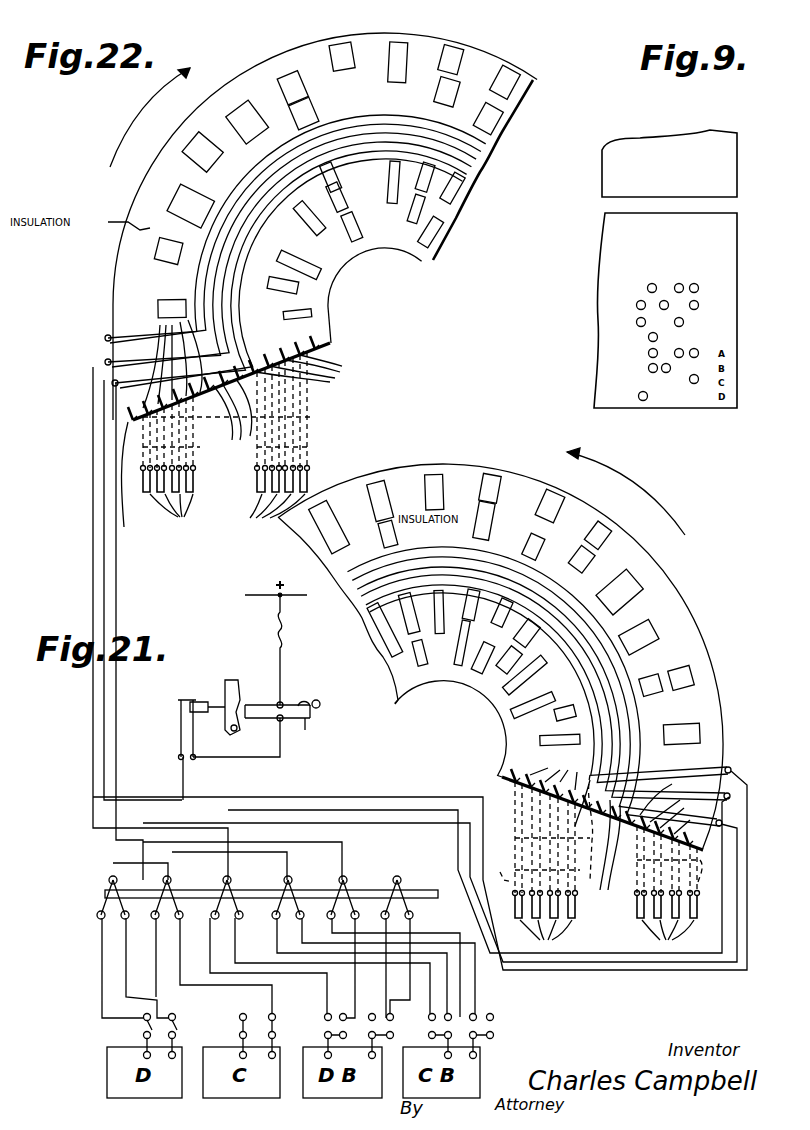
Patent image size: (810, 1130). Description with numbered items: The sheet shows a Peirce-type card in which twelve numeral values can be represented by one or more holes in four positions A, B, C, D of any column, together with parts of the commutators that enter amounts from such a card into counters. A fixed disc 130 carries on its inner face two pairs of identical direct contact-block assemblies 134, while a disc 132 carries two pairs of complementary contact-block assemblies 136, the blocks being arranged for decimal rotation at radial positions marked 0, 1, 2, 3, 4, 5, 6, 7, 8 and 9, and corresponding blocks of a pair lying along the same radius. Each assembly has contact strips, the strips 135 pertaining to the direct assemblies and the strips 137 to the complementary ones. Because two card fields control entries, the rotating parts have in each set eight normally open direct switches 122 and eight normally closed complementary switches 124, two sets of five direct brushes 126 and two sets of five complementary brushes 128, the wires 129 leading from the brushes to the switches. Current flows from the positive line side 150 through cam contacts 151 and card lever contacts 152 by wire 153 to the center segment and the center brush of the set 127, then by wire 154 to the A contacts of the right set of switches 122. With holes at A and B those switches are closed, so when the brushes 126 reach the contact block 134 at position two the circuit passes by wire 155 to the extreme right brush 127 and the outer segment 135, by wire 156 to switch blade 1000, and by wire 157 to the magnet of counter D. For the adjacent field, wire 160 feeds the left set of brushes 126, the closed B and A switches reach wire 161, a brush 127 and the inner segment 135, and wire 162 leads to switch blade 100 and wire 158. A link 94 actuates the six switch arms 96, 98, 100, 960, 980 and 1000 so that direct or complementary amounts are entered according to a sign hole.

In FIG. 22, the radial position marked zero 0 is at (506, 60).
In FIG. 21, the radial position marked zero 0 is at (305, 504).
In FIG. 22, the radial position marked one 1 is at (458, 40).
In FIG. 21, the radial position marked one 1 is at (362, 476).
In FIG. 22, the radial position marked two 2 is at (388, 34).
In FIG. 21, the radial position marked two 2 is at (422, 464).
In FIG. 22, the radial position marked three 3 is at (330, 38).
In FIG. 21, the radial position marked three 3 is at (488, 470).
In FIG. 22, the radial position marked four 4 is at (268, 62).
In FIG. 21, the radial position marked four 4 is at (548, 482).
In FIG. 22, the radial position marked five 5 is at (216, 96).
In FIG. 21, the radial position marked five 5 is at (600, 510).
In FIG. 22, the radial position marked six 6 is at (166, 140).
In FIG. 21, the radial position marked six 6 is at (646, 552).
In FIG. 22, the radial position marked seven 7 is at (135, 192).
In FIG. 21, the radial position marked seven 7 is at (686, 598).
In FIG. 22, the radial position marked eight 8 is at (112, 250).
In FIG. 21, the radial position marked eight 8 is at (712, 660).
In FIG. 22, the radial position marked nine 9 is at (112, 318).
In FIG. 21, the radial position marked nine 9 is at (724, 721).
In FIG. 21, the link 94 is at (420, 890).
In FIG. 21, the switch-arm 96 is at (388, 882).
In FIG. 21, the switch-arm 98 is at (280, 882).
In FIG. 21, the switch blade 100 is at (128, 890).
In FIG. 21, the direct switch 122 is at (607, 871).
In FIG. 22, the complementary switch 124 is at (226, 445).
In FIG. 21, the direct brush 126 is at (602, 797).
In FIG. 21, the brush of the set 127 is at (621, 860).
In FIG. 22, the complementary brush 128 is at (133, 518).
In FIG. 22, the wires 129 is at (232, 417).
In FIG. 21, the fixed disc 130 is at (430, 688).
In FIG. 22, the disc 132 is at (336, 296).
In FIG. 21, the direct contact-block assembly 134 is at (527, 478).
In FIG. 21, the contact strip 135 is at (525, 590).
In FIG. 22, the complementary contact-block assembly 136 is at (330, 70).
In FIG. 22, the contact strip 137 is at (334, 132).
In FIG. 21, the positive line side 150 is at (256, 594).
In FIG. 21, the cam contacts 151 is at (300, 704).
In FIG. 21, the card lever contacts 152 is at (190, 700).
In FIG. 21, the wire 153 is at (745, 900).
In FIG. 21, the wire 154 is at (618, 905).
In FIG. 21, the wire 155 is at (709, 872).
In FIG. 21, the wire 156 is at (740, 875).
In FIG. 21, the wire 157 is at (100, 955).
In FIG. 21, the wire 158 is at (158, 1016).
In FIG. 21, the wire 160 is at (590, 821).
In FIG. 21, the wire 161 is at (499, 869).
In FIG. 21, the wire 162 is at (200, 800).
In FIG. 21, the switch-arm 960 is at (336, 880).
In FIG. 21, the switch-arm 980 is at (200, 878).
In FIG. 21, the switch blade 1000 is at (98, 898).